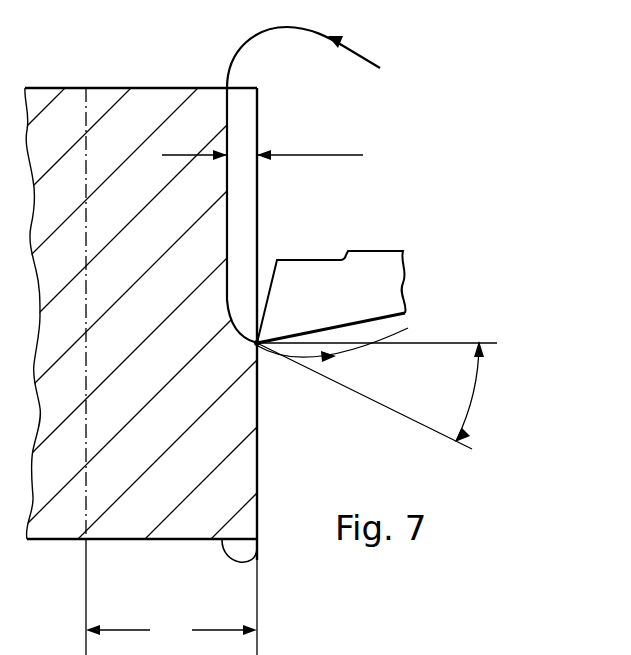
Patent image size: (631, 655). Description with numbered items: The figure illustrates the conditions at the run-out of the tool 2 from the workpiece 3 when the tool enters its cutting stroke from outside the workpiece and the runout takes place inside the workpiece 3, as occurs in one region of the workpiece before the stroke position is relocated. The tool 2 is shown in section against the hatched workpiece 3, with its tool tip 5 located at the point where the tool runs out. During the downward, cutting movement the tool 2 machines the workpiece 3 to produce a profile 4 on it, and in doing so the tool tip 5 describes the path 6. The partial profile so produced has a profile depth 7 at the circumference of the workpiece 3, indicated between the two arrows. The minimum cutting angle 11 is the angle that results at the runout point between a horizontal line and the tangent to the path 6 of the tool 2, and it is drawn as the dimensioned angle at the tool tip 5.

The tool 2 is at (320, 272).
The workpiece 3 is at (56, 522).
The profile 4 is at (258, 545).
The tool tip 5 is at (262, 348).
The path 6 is at (368, 58).
The profile depth 7 is at (240, 153).
The minimum cutting angle 11 is at (447, 390).